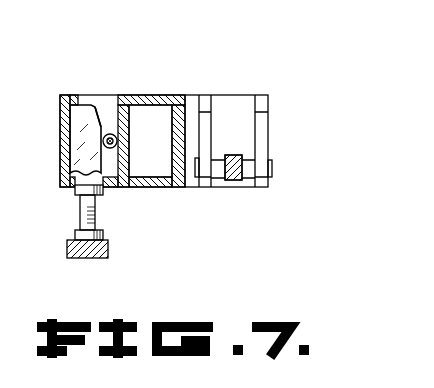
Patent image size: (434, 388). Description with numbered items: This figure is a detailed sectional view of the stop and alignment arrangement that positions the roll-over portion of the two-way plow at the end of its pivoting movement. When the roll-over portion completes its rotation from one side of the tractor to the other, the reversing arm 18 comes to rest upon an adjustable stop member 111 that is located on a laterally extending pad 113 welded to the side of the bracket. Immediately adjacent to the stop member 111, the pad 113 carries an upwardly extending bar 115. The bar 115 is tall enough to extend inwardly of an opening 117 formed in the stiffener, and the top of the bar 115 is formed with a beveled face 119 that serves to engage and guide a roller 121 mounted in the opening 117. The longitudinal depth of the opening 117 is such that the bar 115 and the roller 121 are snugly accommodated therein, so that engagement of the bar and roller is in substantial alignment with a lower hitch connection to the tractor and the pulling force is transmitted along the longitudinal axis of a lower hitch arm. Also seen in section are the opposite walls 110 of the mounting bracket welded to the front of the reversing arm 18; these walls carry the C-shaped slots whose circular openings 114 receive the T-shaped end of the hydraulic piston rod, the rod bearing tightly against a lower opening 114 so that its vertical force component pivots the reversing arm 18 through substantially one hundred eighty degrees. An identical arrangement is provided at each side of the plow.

The reversing arm 18 is at (176, 95).
The walls of the mounting bracket 110 is at (270, 97).
The adjustable stop member 111 is at (80, 208).
The laterally extending pad 113 is at (68, 255).
The circular openings 114 is at (272, 170).
The upwardly extending bar 115 is at (82, 104).
The opening 117 is at (122, 94).
The beveled face 119 is at (97, 106).
The roller 121 is at (113, 150).